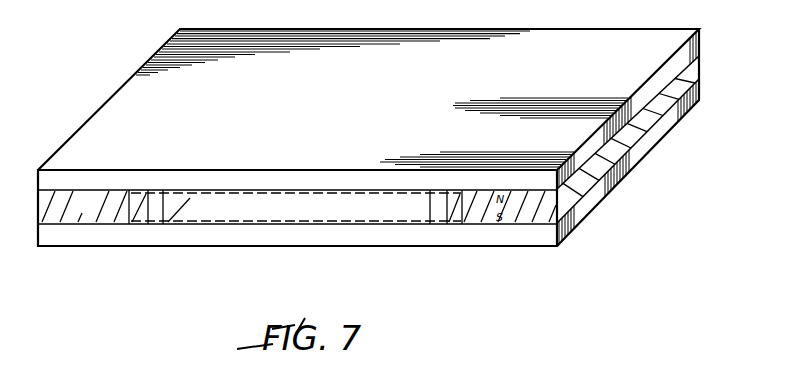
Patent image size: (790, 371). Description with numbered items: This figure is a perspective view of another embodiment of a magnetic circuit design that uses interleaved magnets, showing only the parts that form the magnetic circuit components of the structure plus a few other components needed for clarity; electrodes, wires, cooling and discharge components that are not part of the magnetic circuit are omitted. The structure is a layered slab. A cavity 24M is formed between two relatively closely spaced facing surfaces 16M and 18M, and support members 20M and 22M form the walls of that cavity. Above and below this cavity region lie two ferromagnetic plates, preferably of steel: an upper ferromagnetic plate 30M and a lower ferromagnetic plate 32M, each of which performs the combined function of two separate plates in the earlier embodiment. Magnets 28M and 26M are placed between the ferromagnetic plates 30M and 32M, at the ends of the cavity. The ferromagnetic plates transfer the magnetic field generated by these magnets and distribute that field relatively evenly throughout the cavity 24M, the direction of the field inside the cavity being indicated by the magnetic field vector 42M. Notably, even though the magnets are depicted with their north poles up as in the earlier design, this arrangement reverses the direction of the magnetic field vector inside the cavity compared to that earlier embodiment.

The facing surface 16M is at (307, 200).
The facing surface 18M is at (298, 222).
The support member 20M is at (153, 214).
The support member 22M is at (438, 214).
The cavity 24M is at (336, 206).
The magnet 26M is at (49, 214).
The magnet 28M is at (545, 203).
The ferromagnetic plate 30M is at (543, 178).
The ferromagnetic plate 32M is at (548, 240).
The magnetic field vector 42M is at (249, 214).